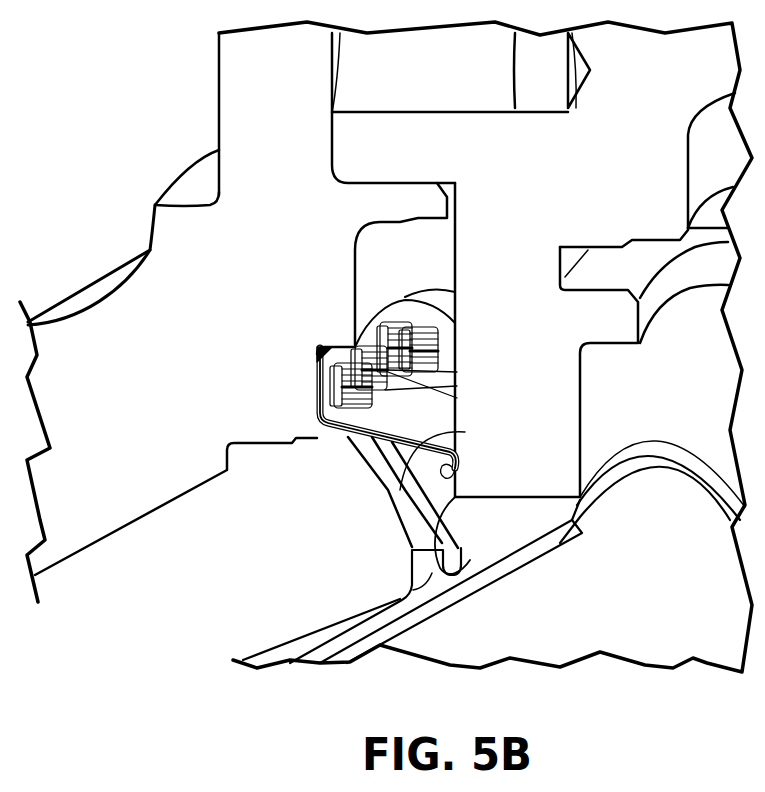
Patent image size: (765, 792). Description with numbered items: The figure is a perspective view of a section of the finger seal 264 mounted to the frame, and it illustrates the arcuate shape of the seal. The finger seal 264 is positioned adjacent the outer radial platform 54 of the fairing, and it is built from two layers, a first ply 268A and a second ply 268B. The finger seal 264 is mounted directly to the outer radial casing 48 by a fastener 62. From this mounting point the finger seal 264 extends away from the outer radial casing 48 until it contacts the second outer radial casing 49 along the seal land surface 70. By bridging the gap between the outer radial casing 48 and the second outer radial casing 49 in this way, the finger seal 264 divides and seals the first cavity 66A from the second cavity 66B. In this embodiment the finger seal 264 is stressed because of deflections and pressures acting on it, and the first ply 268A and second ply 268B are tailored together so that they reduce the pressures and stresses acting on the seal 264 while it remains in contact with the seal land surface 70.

The outer radial casing 48 is at (260, 318).
The second outer radial casing 49 is at (527, 235).
The first cavity 66A is at (428, 275).
The second cavity 66B is at (333, 527).
The fastener 62 is at (460, 398).
The finger seal 264 is at (342, 439).
The first ply 268A is at (455, 490).
The second ply 268B is at (462, 432).
The outer radial platform 54 is at (415, 588).
The seal land surface 70 is at (452, 540).